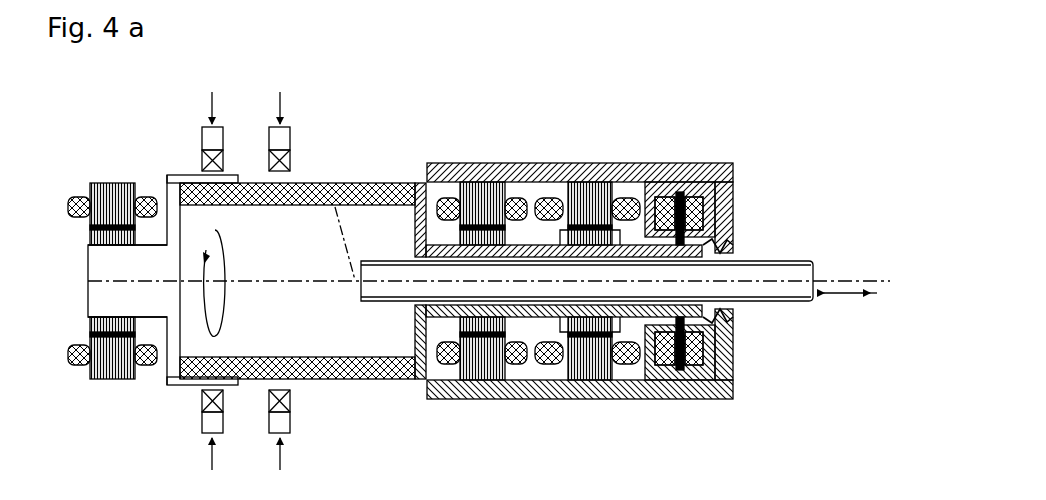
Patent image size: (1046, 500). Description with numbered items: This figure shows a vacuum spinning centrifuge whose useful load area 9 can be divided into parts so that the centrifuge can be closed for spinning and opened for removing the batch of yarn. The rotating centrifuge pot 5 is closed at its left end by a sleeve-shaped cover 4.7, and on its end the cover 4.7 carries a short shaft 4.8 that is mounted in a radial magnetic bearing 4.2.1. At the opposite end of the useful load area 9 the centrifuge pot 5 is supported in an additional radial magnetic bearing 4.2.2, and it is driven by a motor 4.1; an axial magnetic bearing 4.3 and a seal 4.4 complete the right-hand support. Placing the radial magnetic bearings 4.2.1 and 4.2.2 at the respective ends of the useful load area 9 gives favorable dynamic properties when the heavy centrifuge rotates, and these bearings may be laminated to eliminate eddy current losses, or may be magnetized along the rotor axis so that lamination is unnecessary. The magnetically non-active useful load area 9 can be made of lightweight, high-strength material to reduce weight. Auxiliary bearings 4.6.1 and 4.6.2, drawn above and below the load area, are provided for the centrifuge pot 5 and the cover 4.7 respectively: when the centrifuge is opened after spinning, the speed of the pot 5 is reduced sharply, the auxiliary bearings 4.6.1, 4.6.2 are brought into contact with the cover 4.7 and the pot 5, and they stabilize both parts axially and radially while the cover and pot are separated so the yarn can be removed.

The motor 4.1 is at (587, 182).
The radial magnetic bearing 4.2.1 is at (118, 182).
The additional radial magnetic bearing 4.2.2 is at (485, 182).
The axial magnetic bearing 4.3 is at (698, 198).
The seal 4.4 is at (727, 240).
The auxiliary bearing 4.6.1 is at (202, 147).
The auxiliary bearing 4.6.2 is at (292, 145).
The sleeve-shaped cover 4.7 is at (173, 387).
The short shaft 4.8 is at (88, 282).
The centrifuge pot 5 is at (393, 378).
The useful load area 9 is at (412, 81).